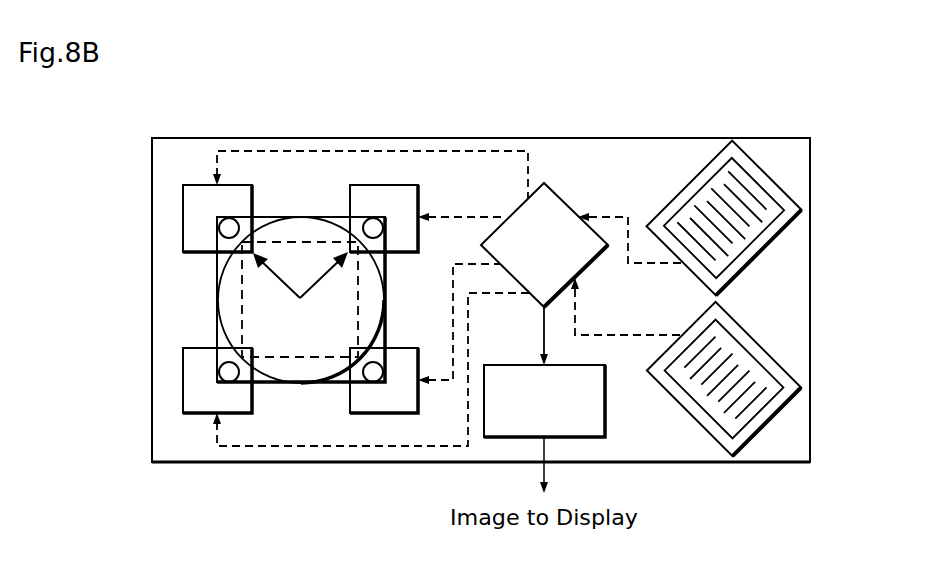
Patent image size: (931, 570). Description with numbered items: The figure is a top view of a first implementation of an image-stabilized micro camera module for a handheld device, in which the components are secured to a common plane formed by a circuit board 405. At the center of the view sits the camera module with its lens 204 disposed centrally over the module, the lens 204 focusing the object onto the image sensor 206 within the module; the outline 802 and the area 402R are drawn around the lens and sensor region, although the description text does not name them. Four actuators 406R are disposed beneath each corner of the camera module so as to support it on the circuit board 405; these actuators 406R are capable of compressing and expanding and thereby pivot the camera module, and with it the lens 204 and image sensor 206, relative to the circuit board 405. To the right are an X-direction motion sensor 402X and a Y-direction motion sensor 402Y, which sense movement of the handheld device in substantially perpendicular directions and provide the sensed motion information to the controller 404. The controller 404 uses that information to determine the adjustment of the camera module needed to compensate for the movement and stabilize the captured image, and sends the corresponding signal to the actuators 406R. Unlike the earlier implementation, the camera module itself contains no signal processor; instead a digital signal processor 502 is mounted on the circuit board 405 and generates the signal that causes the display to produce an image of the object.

The lens 204 is at (217, 340).
The image sensor 206 is at (240, 300).
The image circle 802 is at (217, 266).
The red imager 402R is at (238, 362).
The Y-direction motion sensor 402Y is at (755, 164).
The X-direction motion sensor 402X is at (755, 436).
The controller 404 is at (563, 202).
The circuit board 405 is at (810, 293).
The actuators 406R is at (388, 185).
The digital signal processor 502 is at (605, 395).